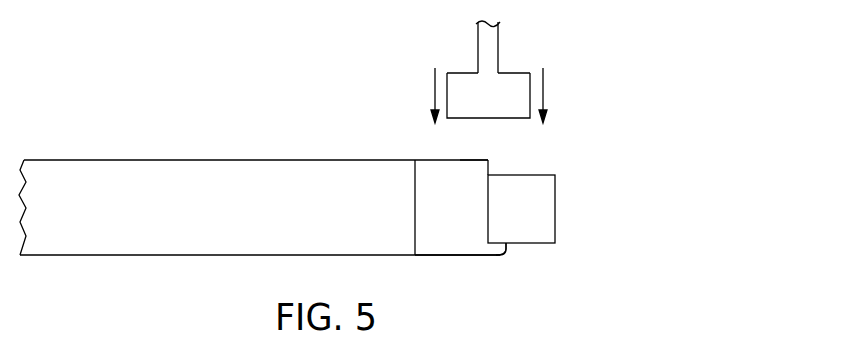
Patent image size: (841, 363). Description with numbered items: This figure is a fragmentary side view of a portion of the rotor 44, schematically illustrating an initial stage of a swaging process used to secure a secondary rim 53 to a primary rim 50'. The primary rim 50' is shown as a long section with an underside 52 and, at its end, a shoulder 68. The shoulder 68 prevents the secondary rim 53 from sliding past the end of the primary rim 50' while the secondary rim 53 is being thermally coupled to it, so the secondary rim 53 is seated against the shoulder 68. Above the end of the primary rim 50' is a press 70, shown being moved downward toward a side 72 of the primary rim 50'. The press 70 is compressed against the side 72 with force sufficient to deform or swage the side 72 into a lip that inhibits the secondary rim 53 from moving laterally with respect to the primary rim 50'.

The rotor 44 is at (598, 229).
The primary rim 50' is at (450, 281).
The underside 52 is at (250, 170).
The secondary rim 53 is at (555, 208).
The shoulder 68 is at (508, 256).
The press 70 is at (498, 51).
The side 72 is at (468, 160).